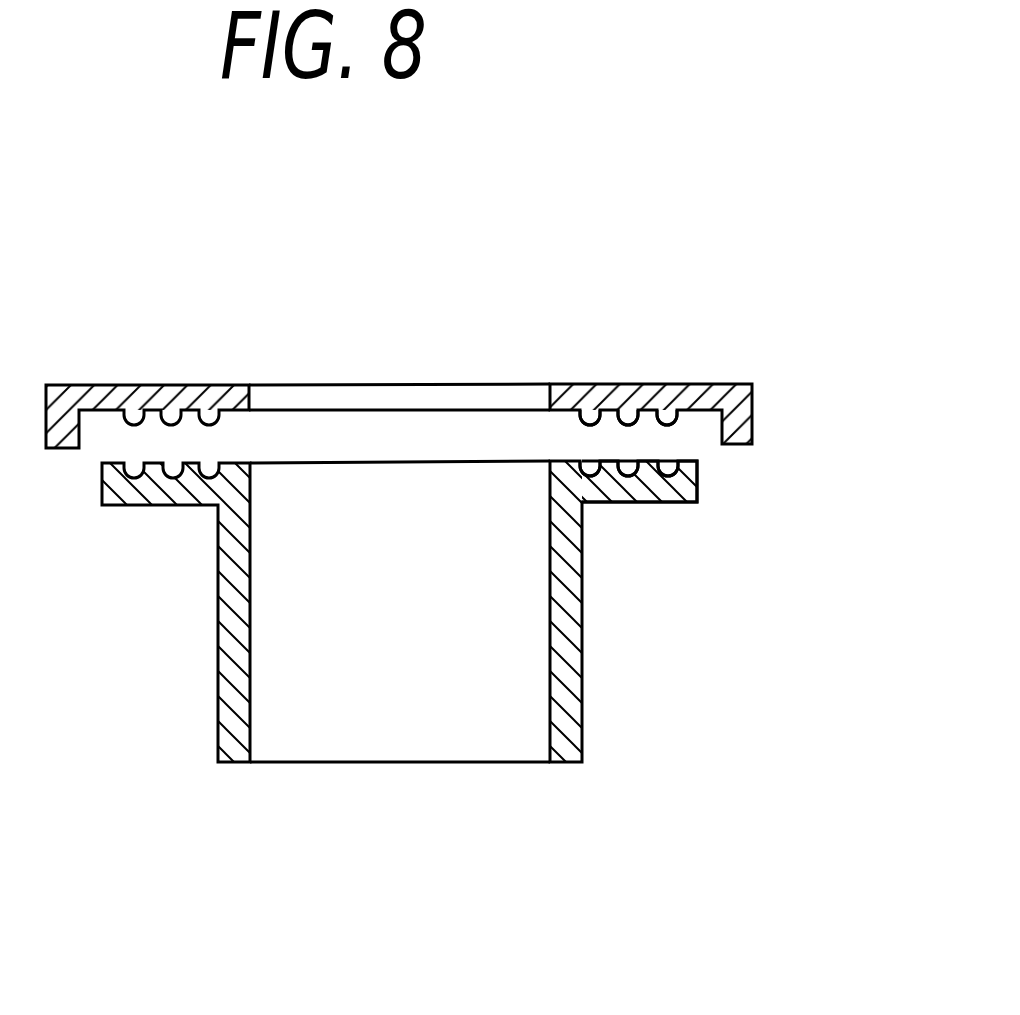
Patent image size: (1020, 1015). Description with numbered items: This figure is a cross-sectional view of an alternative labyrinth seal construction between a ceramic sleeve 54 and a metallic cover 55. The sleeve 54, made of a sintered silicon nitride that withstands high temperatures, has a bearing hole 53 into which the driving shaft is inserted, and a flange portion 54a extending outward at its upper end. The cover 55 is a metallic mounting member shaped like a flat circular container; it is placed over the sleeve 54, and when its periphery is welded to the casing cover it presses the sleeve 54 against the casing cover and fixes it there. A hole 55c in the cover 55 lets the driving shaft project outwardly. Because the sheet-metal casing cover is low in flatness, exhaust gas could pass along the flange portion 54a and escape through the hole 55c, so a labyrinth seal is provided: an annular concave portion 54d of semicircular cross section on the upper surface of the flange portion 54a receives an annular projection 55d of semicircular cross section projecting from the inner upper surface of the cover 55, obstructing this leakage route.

The bearing hole 53 is at (462, 753).
The sleeve 54 is at (583, 632).
The flange portion 54a is at (697, 492).
The annular concave portion 54d is at (667, 470).
The cover 55 is at (734, 385).
The hole 55c is at (533, 386).
The annular projection 55d is at (676, 417).